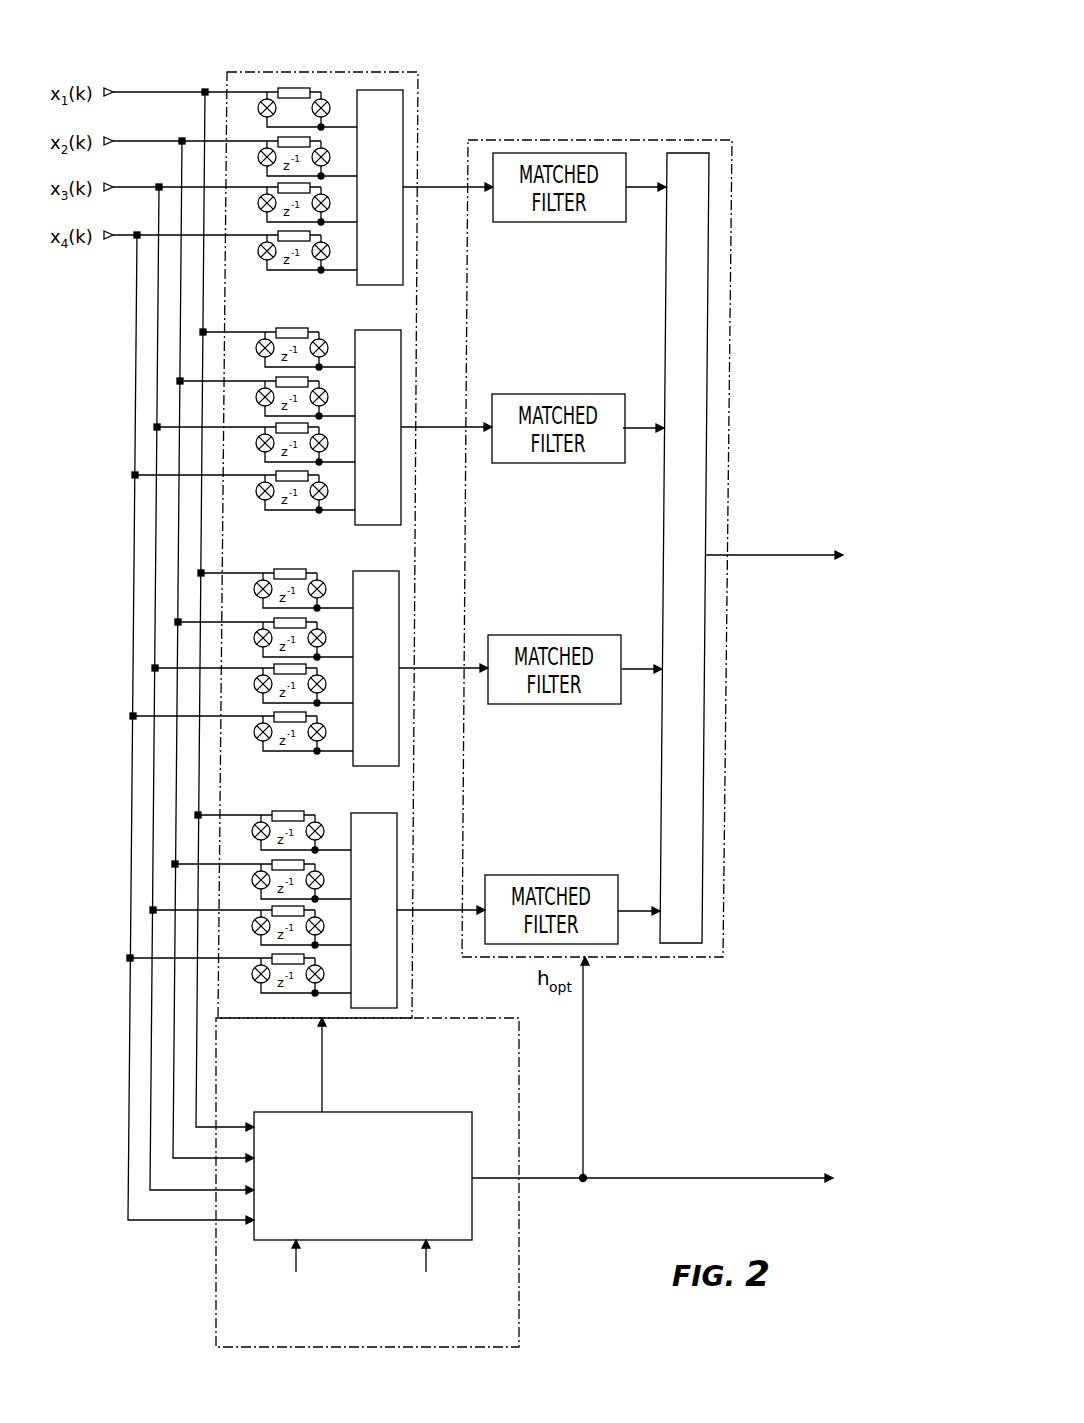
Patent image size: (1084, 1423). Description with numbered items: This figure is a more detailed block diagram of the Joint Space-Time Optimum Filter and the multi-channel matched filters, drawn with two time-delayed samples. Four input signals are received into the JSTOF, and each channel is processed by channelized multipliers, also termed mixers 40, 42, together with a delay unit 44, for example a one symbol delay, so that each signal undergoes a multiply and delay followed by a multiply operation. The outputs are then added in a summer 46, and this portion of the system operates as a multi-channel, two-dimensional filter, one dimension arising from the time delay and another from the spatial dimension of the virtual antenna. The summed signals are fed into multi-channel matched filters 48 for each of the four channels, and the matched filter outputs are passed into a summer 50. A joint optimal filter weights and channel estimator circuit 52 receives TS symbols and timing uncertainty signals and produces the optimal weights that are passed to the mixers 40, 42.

The mixer 40 is at (258, 108).
The mixer 42 is at (323, 99).
The delay unit 44 is at (295, 87).
The summer 46 is at (403, 128).
The multi-channel matched filters 48 is at (652, 491).
The summer 50 is at (712, 219).
The joint optimal filter weights and channel estimator circuit 52 is at (473, 1208).